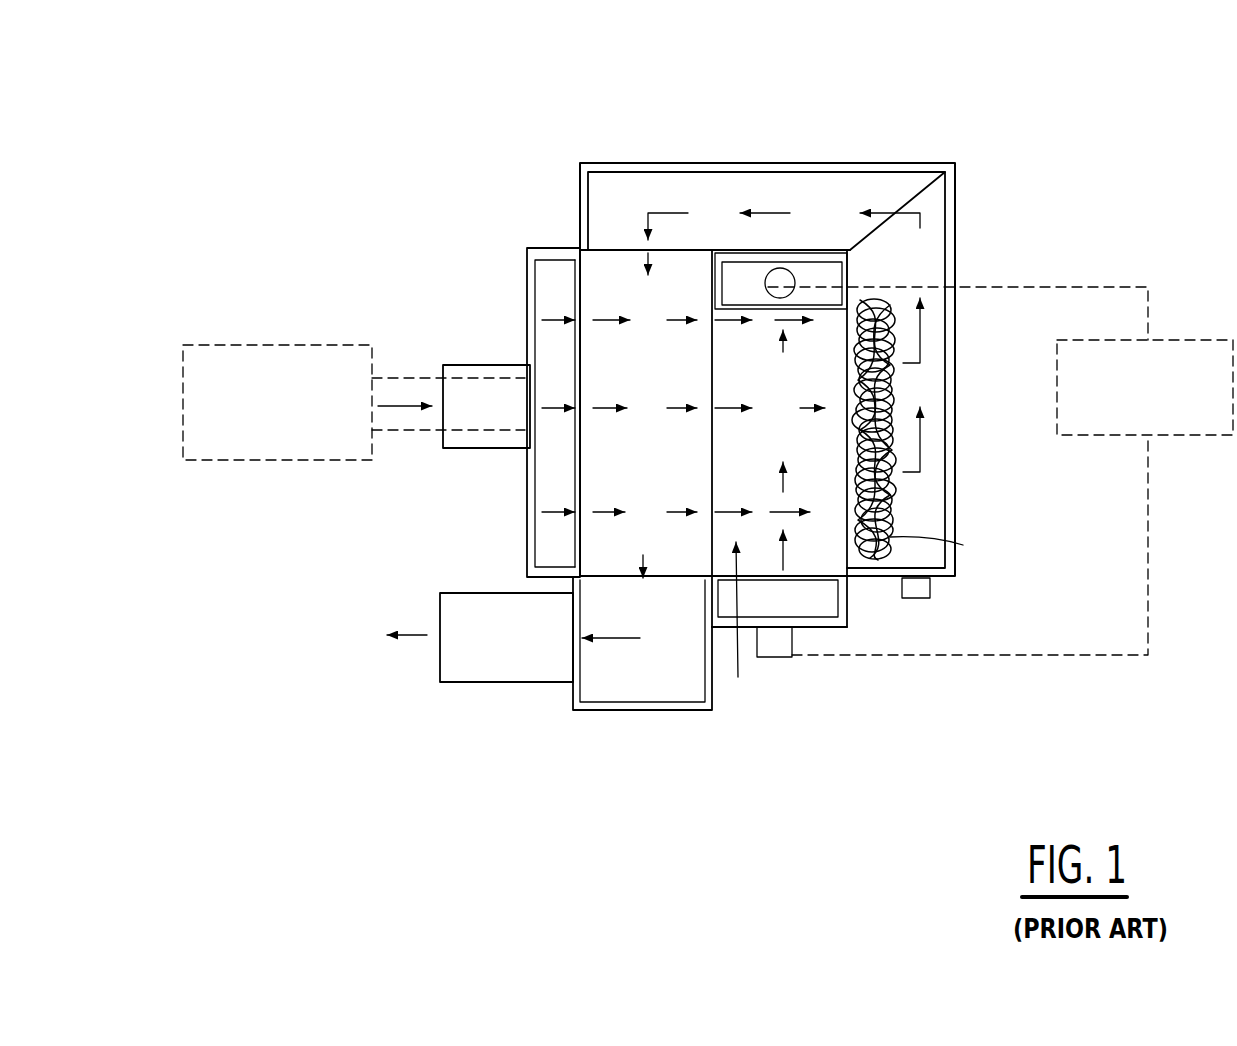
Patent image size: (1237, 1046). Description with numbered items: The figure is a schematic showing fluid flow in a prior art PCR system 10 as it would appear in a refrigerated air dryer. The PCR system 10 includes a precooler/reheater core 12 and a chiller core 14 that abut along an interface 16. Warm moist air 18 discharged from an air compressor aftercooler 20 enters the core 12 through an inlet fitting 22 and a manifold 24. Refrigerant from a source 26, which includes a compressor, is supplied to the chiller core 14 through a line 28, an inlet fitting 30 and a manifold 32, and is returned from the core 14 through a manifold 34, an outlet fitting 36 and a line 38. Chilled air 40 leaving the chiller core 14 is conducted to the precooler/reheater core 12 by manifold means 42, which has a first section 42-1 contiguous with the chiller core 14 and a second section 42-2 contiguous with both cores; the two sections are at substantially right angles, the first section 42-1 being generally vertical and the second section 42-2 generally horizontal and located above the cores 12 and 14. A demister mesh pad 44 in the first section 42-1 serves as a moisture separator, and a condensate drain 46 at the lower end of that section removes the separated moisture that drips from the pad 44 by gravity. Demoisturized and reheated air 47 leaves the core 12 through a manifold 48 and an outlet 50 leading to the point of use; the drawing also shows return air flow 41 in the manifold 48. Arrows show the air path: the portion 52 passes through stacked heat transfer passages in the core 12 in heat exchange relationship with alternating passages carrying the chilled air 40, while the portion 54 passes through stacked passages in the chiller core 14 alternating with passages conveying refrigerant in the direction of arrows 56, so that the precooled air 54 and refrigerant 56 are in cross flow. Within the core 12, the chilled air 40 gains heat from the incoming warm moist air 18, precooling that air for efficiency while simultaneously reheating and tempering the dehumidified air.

The PCR system 10 is at (528, 168).
The precooler/reheater core 12 is at (607, 550).
The chiller core 14 is at (736, 627).
The interface 16 is at (716, 470).
The warm moist air 18 is at (408, 408).
The air compressor aftercooler 20 is at (238, 462).
The inlet fitting 22 is at (490, 365).
The manifold 24 is at (545, 282).
The source 26 is at (1172, 340).
The line 28 is at (1075, 660).
The inlet fitting 30 is at (793, 663).
The manifold 32 is at (847, 605).
The manifold 34 is at (735, 262).
The outlet fitting 36 is at (793, 270).
The line 38 is at (1047, 288).
The chilled air 40 is at (642, 253).
The return air flow 41 is at (645, 620).
The manifold means 42 is at (877, 162).
The first section 42-1 is at (937, 337).
The second section 42-2 is at (663, 187).
The demister mesh pad 44 is at (890, 407).
The condensate drain 46 is at (920, 600).
The demoisturized and reheated air 47 is at (648, 568).
The manifold 48 is at (605, 712).
The outlet 50 is at (508, 682).
The portion of the path 52 is at (604, 326).
The portion of the path 54 is at (775, 322).
The arrows 56 is at (793, 350).